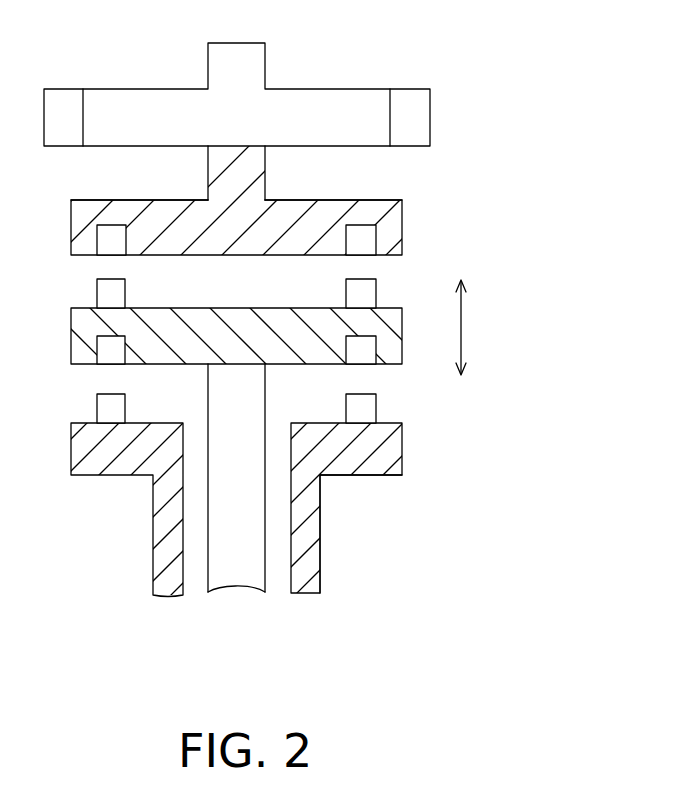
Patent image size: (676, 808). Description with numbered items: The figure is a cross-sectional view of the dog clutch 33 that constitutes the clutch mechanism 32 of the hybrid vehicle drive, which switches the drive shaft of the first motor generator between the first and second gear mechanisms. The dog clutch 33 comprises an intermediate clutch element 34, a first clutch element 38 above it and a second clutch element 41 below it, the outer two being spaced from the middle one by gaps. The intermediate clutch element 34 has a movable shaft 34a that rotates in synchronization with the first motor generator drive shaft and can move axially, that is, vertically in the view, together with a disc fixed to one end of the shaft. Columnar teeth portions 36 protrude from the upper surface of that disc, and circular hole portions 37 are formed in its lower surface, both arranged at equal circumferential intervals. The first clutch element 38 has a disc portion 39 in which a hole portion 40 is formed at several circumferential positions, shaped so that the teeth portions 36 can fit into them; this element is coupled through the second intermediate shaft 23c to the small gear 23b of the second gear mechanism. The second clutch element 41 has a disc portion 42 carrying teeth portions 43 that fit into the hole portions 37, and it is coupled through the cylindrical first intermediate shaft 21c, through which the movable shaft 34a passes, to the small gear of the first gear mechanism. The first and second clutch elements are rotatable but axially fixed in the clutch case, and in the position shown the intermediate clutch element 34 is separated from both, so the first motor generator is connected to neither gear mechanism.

The first intermediate shaft 21c is at (320, 520).
The small gear 23b is at (417, 88).
The second intermediate shaft 23c is at (265, 163).
The clutch mechanism 32 is at (470, 178).
The dog clutch 33 is at (338, 404).
The intermediate clutch element 34 is at (338, 404).
The movable shaft 34a is at (267, 553).
The teeth portions 36 is at (97, 292).
The hole portions 37 is at (110, 352).
The first clutch element 38 is at (336, 195).
The disc portion 39 is at (140, 200).
The hole portion 40 is at (110, 240).
The second clutch element 41 is at (365, 477).
The disc portion 42 is at (338, 404).
The teeth portions 43 is at (95, 407).